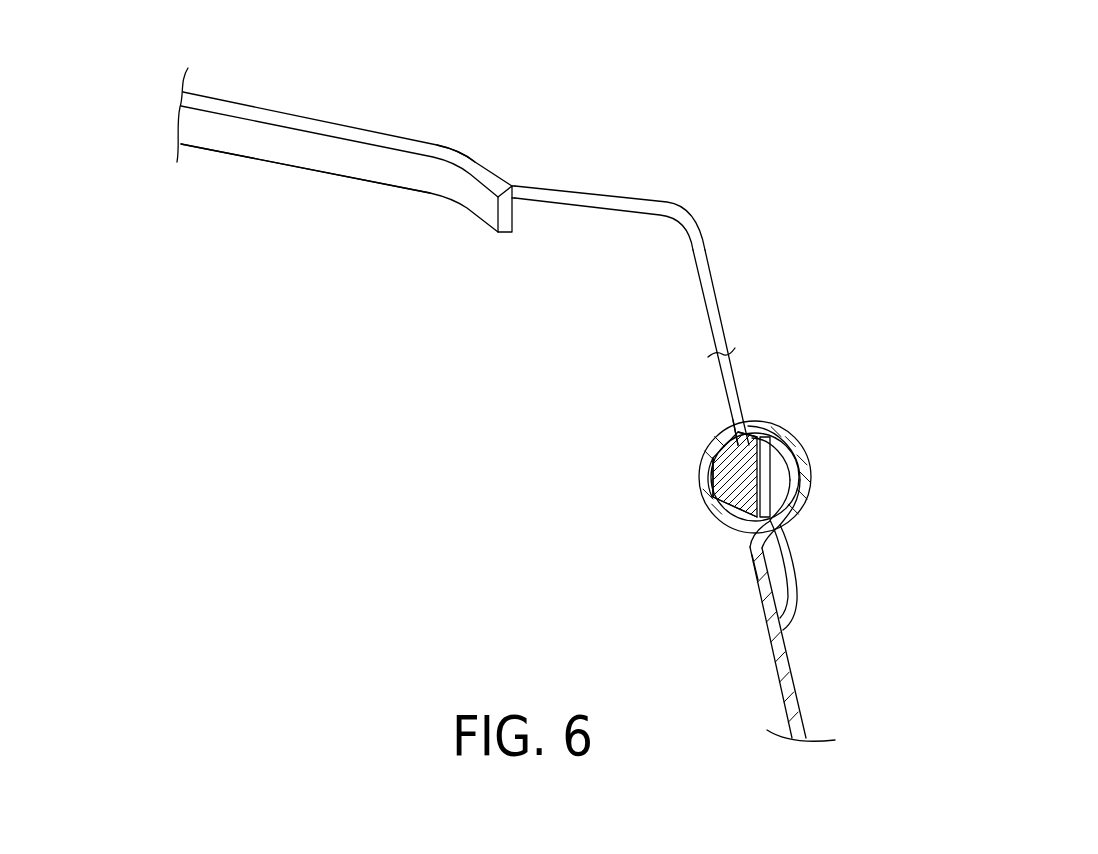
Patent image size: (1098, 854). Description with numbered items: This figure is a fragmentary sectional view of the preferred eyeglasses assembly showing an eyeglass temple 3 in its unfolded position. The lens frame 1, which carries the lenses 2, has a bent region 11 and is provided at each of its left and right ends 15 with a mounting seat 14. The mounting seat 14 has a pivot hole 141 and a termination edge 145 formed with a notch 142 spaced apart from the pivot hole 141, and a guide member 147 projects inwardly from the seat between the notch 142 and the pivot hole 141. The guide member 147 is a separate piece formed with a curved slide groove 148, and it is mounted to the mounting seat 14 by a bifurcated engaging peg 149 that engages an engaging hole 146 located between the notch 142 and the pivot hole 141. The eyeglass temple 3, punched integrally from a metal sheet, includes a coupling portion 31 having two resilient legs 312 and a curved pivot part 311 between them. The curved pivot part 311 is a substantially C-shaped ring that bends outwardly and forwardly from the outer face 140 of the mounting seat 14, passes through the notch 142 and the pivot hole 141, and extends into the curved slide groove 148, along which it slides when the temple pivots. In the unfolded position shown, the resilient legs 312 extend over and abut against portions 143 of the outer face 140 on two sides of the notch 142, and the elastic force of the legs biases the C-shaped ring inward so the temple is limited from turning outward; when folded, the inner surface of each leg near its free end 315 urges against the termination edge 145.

The lens frame 1 is at (274, 86).
The bent portion of frame 11 is at (407, 146).
The left and right ends 15 is at (507, 187).
The lens 2 is at (357, 163).
The mounting seat 14 is at (745, 378).
The pivot hole 141 is at (730, 415).
The engaging hole 146 is at (747, 437).
The guide member 147 is at (710, 477).
The curved slide groove 148 is at (730, 490).
The notch 142 is at (728, 527).
The curved pivot part 311 is at (712, 470).
The coupling portion 31 is at (828, 464).
The resilient leg 312 is at (775, 466).
The free end 315 is at (795, 446).
The engaging peg 149 is at (805, 505).
The portions of the outer face 143 is at (808, 452).
The outer face 140 is at (916, 522).
The eyeglass temple 3 is at (810, 683).
The termination edge 145 is at (748, 548).